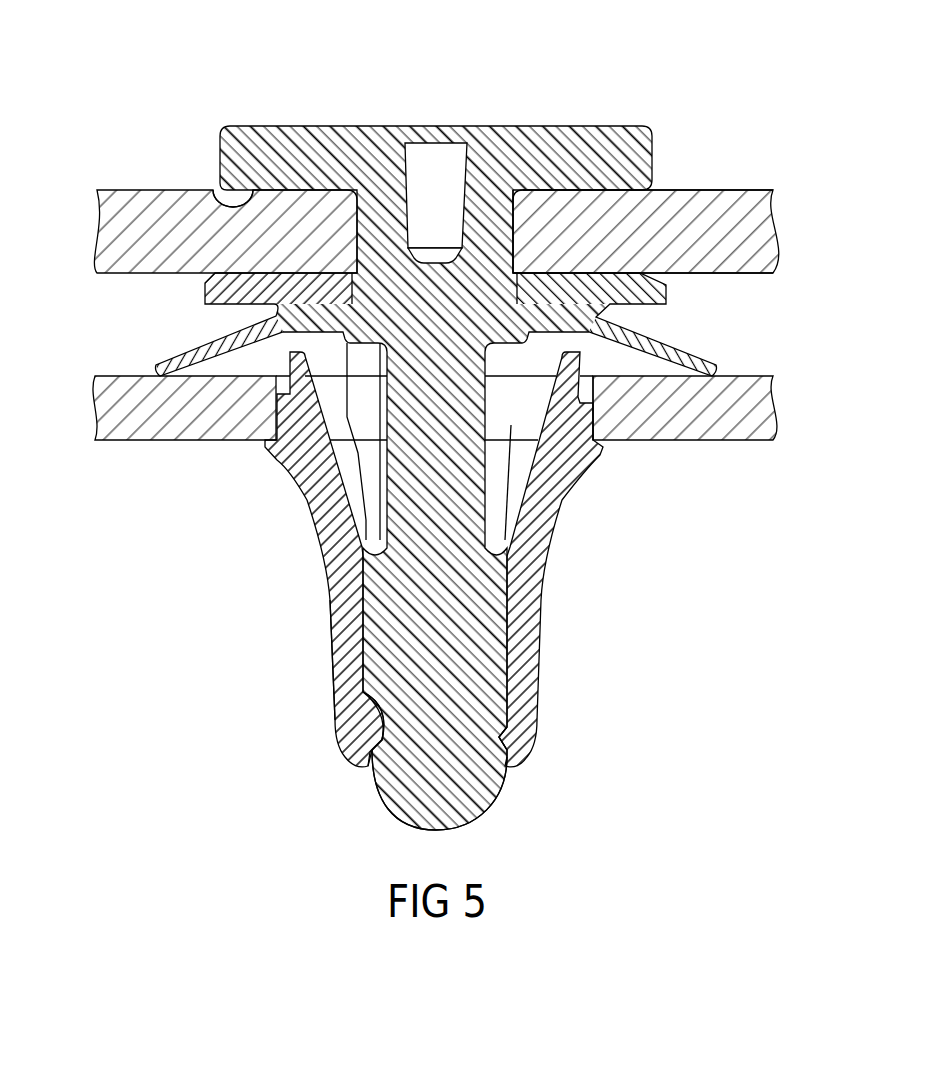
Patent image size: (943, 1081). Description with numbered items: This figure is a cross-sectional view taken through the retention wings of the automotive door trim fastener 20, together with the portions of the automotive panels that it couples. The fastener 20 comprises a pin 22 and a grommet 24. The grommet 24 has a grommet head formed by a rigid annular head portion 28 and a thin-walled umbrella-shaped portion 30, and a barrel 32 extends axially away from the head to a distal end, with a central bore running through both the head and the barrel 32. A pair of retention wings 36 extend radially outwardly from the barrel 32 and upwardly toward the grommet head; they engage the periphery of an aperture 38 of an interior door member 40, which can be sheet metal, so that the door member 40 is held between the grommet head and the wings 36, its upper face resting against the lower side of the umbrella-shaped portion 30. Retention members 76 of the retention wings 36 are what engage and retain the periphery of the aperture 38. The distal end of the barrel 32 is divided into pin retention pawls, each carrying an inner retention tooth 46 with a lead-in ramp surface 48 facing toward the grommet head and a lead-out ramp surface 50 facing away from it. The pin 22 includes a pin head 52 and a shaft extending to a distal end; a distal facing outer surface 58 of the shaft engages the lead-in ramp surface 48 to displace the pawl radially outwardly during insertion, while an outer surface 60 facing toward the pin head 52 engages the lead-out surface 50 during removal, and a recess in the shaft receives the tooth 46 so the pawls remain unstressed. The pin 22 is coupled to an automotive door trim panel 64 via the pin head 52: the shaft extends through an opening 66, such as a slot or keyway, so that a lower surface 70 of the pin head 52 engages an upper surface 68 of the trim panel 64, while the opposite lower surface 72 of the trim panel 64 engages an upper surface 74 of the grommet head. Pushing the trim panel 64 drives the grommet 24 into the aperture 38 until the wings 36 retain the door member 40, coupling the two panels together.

The automotive door trim fastener 20 is at (431, 422).
The pin 22 is at (436, 176).
The grommet 24 is at (687, 348).
The rigid annular head portion 28 is at (215, 295).
The thin-walled umbrella-shaped portion 30 is at (178, 358).
The barrel 32 is at (443, 510).
The retention wings 36 is at (444, 577).
The aperture 38 is at (507, 430).
The interior door member 40 is at (435, 424).
The inner retention tooth 46 is at (492, 738).
The lead-in ramp surface 48 is at (341, 690).
The lead-out ramp surface 50 is at (370, 767).
The pin head 52 is at (243, 160).
The distal facing outer surface 58 is at (495, 782).
The outer surface 60 is at (368, 727).
The automotive door trim panel 64 is at (666, 229).
The opening 66 is at (505, 232).
The upper surface 68 is at (693, 190).
The lower surface 70 is at (227, 200).
The lower surface 72 is at (748, 274).
The upper surface 74 is at (206, 217).
The retention members 76 is at (594, 422).